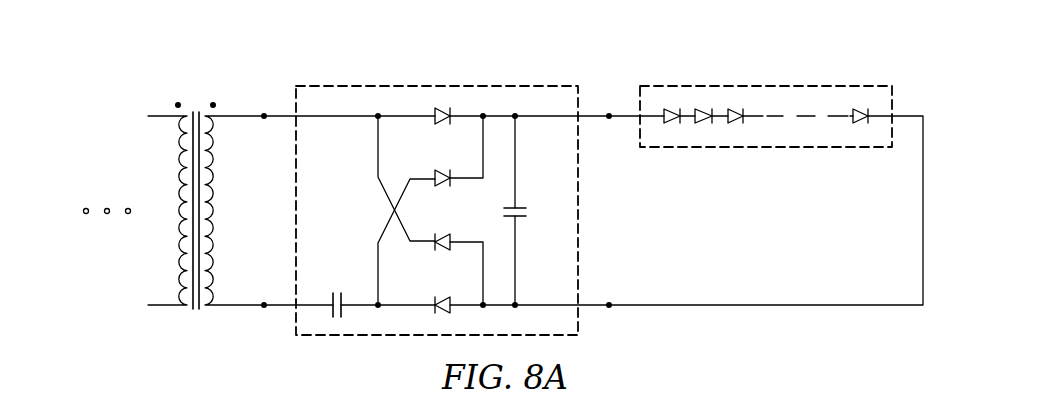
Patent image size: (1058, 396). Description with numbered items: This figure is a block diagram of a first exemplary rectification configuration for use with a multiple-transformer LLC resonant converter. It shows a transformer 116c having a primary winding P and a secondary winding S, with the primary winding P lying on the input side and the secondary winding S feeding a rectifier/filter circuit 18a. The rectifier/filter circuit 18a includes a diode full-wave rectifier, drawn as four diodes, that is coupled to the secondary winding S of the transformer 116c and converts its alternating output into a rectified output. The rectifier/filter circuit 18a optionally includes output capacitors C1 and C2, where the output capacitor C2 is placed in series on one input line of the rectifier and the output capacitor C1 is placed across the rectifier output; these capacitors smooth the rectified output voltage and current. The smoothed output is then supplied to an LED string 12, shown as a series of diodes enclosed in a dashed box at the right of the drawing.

The transformer 116c is at (197, 92).
The rectifier/filter circuit 18a is at (416, 78).
The LED string 12 is at (787, 78).
The output capacitor C1 is at (530, 210).
The output capacitor C2 is at (339, 295).
The primary winding P is at (164, 211).
The secondary winding S is at (226, 211).